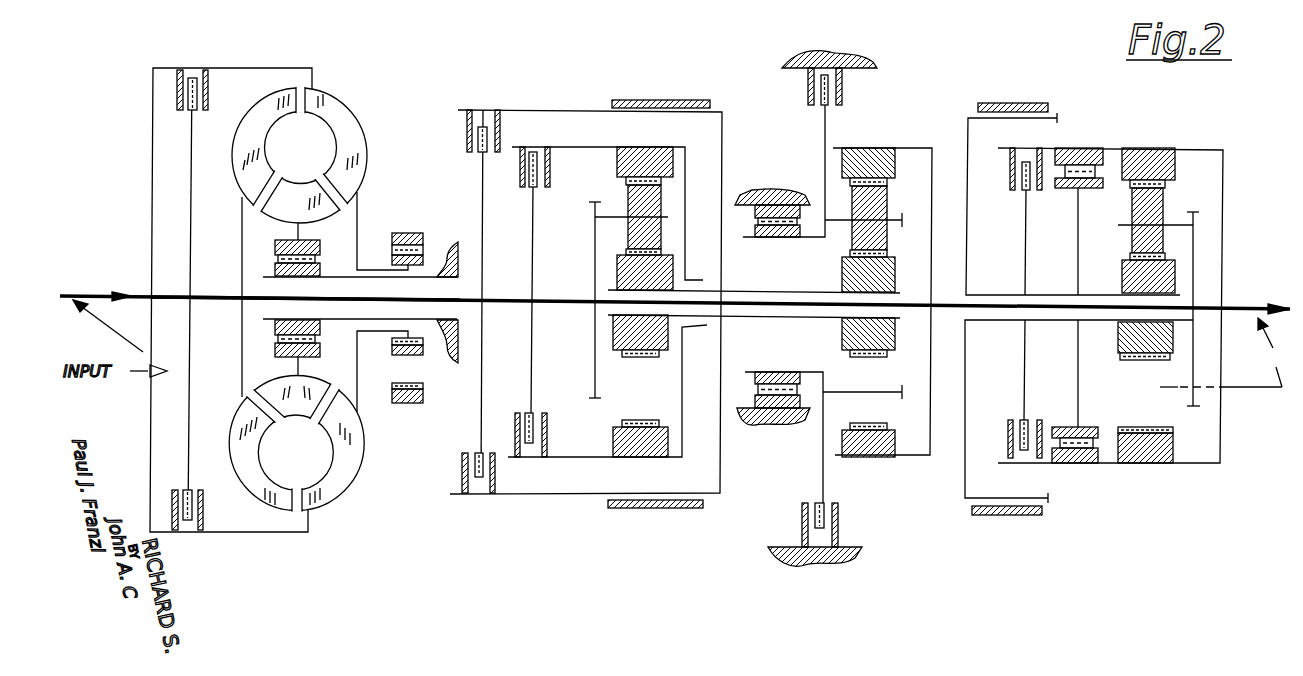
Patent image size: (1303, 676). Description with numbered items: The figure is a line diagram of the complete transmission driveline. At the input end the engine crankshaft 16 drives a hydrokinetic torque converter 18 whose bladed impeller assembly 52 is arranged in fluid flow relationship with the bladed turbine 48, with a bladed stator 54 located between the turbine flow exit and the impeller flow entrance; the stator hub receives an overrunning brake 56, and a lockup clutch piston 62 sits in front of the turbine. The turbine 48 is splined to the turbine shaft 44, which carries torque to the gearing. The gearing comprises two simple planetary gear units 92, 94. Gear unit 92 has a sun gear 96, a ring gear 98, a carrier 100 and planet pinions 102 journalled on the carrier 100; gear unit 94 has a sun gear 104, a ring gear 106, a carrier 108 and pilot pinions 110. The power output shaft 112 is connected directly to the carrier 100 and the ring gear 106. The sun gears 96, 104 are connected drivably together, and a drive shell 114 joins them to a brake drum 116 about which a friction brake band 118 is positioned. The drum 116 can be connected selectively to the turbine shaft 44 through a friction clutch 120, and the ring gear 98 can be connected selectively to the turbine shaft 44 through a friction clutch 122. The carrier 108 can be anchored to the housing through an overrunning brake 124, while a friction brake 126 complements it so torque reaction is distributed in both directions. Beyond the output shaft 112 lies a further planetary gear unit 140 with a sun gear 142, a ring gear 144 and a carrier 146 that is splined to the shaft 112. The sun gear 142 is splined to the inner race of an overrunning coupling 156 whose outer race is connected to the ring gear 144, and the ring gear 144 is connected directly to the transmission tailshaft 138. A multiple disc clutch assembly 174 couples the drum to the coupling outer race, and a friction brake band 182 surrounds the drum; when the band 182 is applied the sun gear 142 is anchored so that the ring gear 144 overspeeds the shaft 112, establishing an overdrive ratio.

The crankshaft 16 is at (87, 295).
The hydrokinetic torque converter 18 is at (374, 133).
The turbine shaft 44 is at (216, 300).
The bladed turbine 48 is at (237, 148).
The bladed impeller assembly 52 is at (365, 160).
The bladed stator 54 is at (268, 200).
The overrunning brake 56 is at (275, 262).
The lockup clutch piston 62 is at (190, 197).
The planetary gear unit 92 is at (676, 195).
The planetary gear unit 94 is at (893, 198).
The sun gear 96 is at (628, 272).
The ring gear 98 is at (646, 148).
The carrier 100 is at (612, 220).
The planet pinions 102 is at (630, 195).
The sun gear 104 is at (842, 340).
The ring gear 106 is at (878, 450).
The carrier 108 is at (810, 240).
The pilot pinions 110 is at (852, 240).
The power output shaft 112 is at (752, 302).
The drive shell 114 is at (724, 118).
The brake drum 116 is at (567, 110).
The friction brake band 118 is at (672, 82).
The friction clutch 120 is at (465, 475).
The friction clutch 122 is at (520, 183).
The overrunning brake 124 is at (770, 425).
The friction brake 126 is at (824, 83).
The transmission tailshaft 138 is at (1247, 316).
The planetary gear unit 140 is at (1176, 198).
The sun gear 142 is at (1175, 275).
The ring gear 144 is at (1160, 148).
The carrier 146 is at (1197, 250).
The overrunning coupling 156 is at (1085, 148).
The multiple disc clutch assembly 174 is at (1045, 418).
The friction brake band 182 is at (1035, 90).